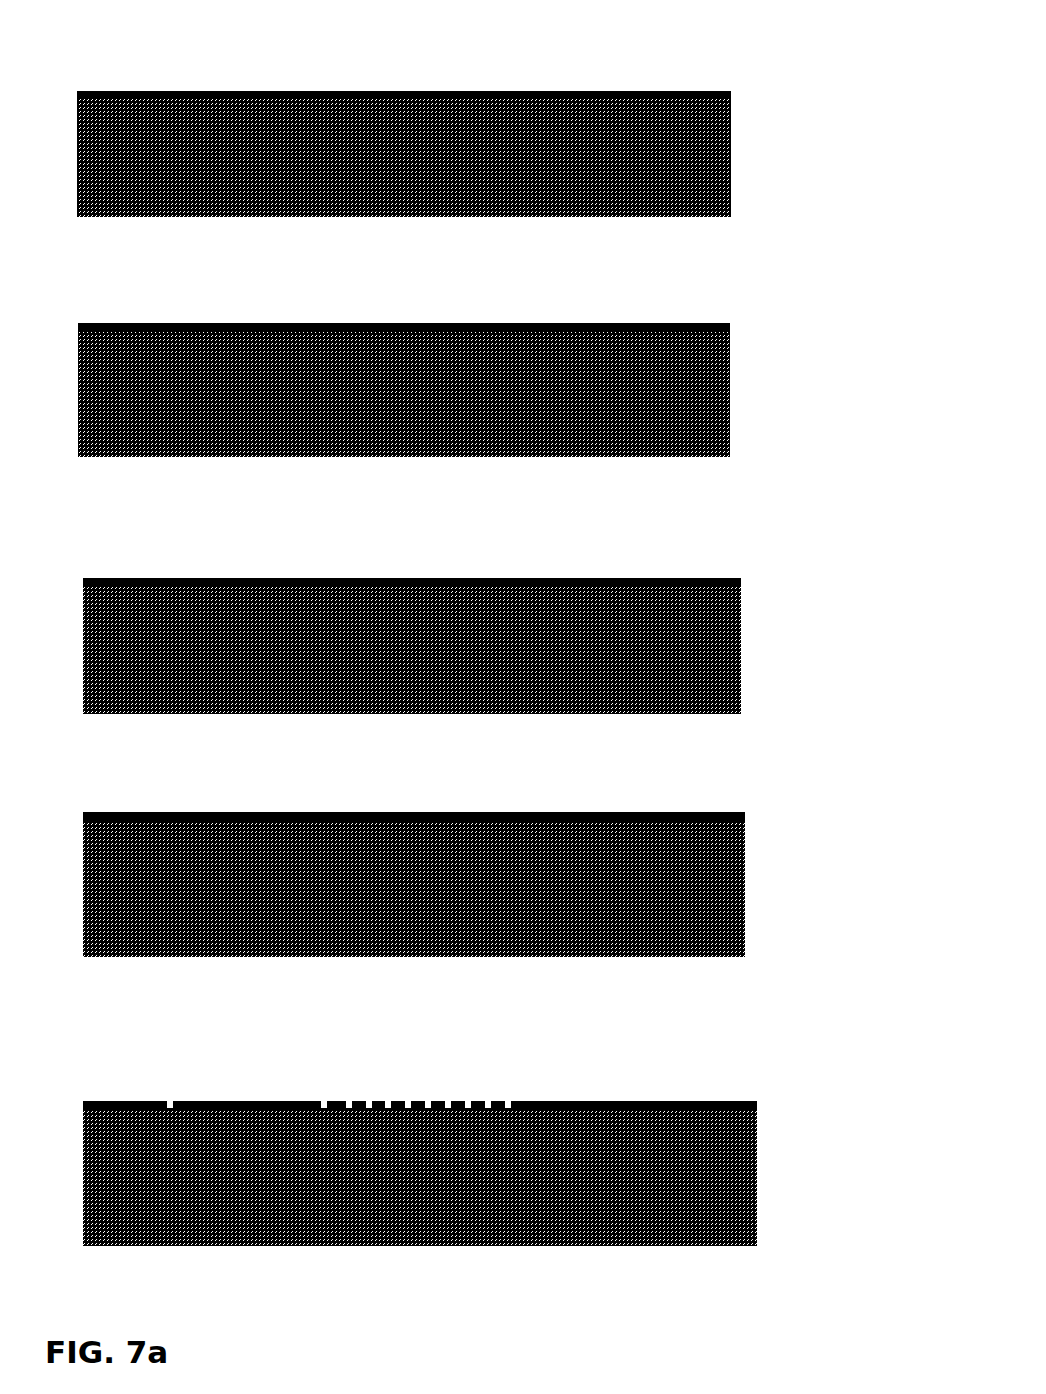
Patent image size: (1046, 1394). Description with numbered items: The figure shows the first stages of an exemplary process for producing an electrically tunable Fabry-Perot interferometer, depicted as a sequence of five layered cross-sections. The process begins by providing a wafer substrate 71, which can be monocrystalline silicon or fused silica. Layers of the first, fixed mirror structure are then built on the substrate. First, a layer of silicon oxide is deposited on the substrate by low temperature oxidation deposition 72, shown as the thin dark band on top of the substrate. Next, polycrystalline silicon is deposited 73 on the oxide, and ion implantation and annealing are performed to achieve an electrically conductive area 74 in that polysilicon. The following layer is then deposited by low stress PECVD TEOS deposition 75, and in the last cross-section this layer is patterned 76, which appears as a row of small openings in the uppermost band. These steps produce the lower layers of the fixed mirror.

The wafer substrate 71 is at (713, 153).
The silicon oxide layer deposited by LTO 72 is at (640, 87).
The polycrystalline silicon layer 73 is at (651, 318).
The electrically conductive area 74 is at (260, 571).
The low stress PECVD TEOS layer 75 is at (500, 807).
The patterned TEOS layer 76 is at (315, 1092).